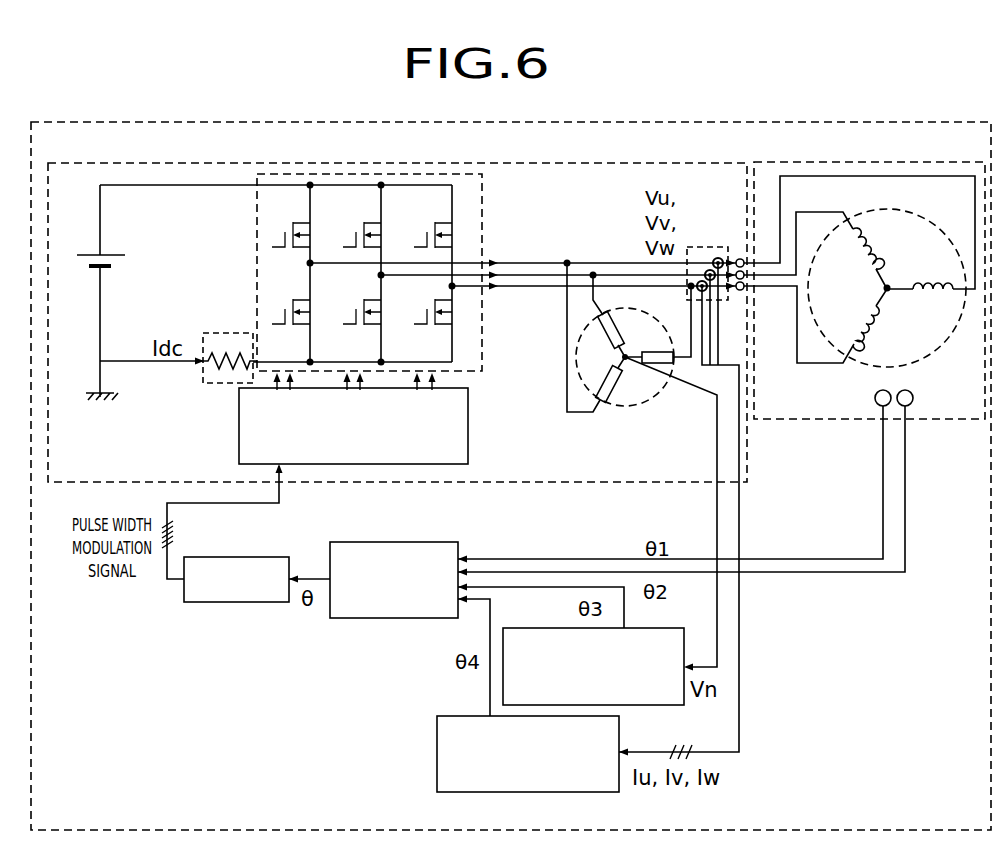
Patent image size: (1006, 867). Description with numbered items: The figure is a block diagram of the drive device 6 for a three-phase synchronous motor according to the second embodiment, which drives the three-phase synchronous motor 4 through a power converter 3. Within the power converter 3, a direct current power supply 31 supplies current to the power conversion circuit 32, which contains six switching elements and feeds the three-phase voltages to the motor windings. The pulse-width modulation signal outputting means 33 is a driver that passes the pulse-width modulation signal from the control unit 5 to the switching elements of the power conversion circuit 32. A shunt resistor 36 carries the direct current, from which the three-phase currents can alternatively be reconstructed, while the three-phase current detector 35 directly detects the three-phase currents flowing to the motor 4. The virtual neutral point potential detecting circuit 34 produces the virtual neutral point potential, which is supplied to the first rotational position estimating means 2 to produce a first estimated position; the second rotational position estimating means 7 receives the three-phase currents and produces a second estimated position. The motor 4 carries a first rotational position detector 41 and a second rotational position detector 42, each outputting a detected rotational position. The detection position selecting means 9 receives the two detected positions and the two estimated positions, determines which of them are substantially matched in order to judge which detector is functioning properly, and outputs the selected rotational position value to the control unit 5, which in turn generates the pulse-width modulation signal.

The first rotational position estimating means 2 is at (670, 705).
The power converter 3 is at (525, 163).
The three-phase synchronous motor 4 is at (885, 163).
The control unit 5 is at (255, 602).
The drive device for a three-phase synchronous motor 6 is at (828, 122).
The second rotational position estimating means 7 is at (545, 792).
The detection position selecting means 9 is at (415, 542).
The direct current power supply 31 is at (90, 255).
The power conversion circuit 32 is at (482, 195).
The pulse-width modulation signal outputting means 33 is at (468, 420).
The virtual neutral point potential detecting circuit 34 is at (625, 407).
The three-phase current detector 35 is at (710, 247).
The shunt resistor 36 is at (228, 333).
The first rotational position detector 41 is at (875, 395).
The second rotational position detector 42 is at (913, 395).